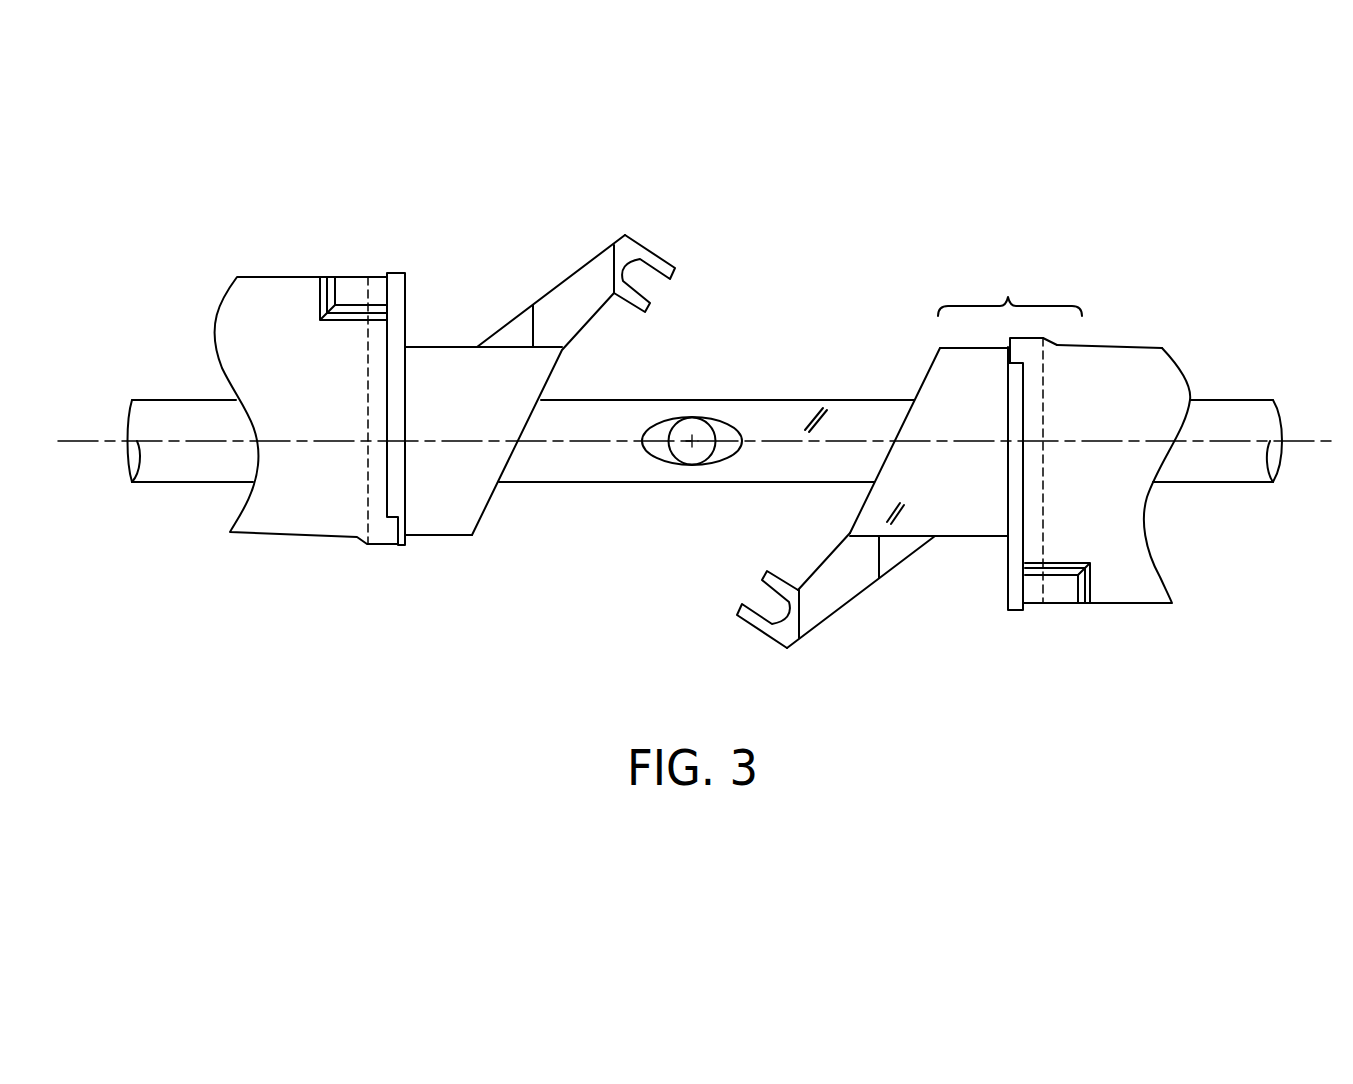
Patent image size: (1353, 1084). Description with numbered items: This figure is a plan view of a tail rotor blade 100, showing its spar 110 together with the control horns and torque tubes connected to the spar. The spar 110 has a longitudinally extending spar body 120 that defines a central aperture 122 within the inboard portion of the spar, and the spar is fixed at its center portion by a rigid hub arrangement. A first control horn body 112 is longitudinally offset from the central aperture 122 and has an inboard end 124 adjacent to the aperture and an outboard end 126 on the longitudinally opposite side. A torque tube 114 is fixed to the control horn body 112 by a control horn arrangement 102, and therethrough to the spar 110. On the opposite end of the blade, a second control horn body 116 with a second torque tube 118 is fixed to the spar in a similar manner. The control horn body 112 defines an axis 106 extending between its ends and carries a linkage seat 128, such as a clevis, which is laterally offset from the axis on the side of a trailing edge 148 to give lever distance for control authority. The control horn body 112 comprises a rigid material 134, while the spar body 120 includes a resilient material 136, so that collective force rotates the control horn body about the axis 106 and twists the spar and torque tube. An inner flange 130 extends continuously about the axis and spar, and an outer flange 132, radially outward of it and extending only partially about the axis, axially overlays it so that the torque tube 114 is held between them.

The tail rotor blade 100 is at (397, 632).
The control horn arrangement 102 is at (1010, 284).
The axis 106 is at (1230, 442).
The spar 110 is at (562, 465).
The control horn body 112 is at (968, 403).
The torque tube 114 is at (1132, 590).
The second control horn body 116 is at (452, 515).
The second torque tube 118 is at (278, 512).
The spar body 120 is at (608, 437).
The central aperture 122 is at (700, 465).
The inboard end 124 is at (915, 360).
The outboard end 126 is at (1125, 330).
The linkage seat 128 is at (745, 617).
The inner flange 130 is at (1043, 493).
The outer flange 132 is at (1006, 495).
The rigid material 134 is at (897, 514).
The resilient material 136 is at (816, 425).
The trailing edge 148 is at (953, 536).